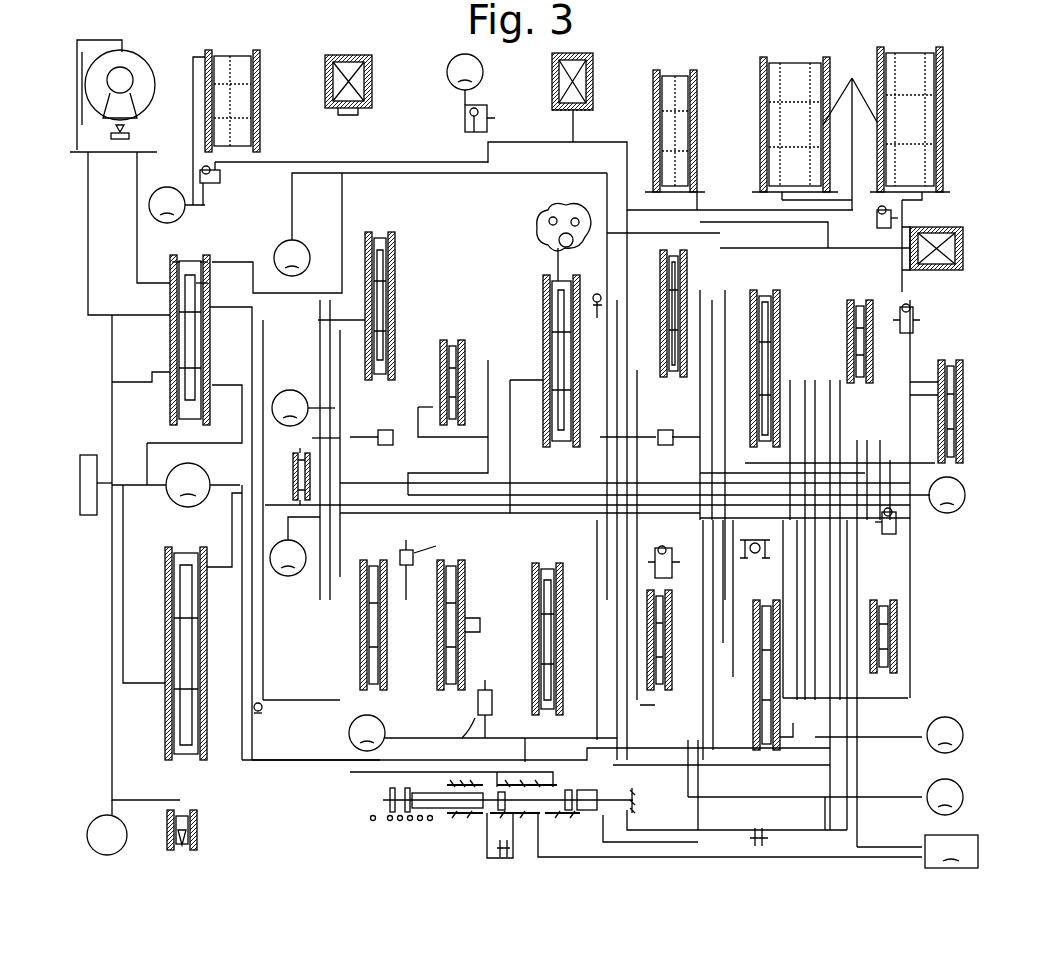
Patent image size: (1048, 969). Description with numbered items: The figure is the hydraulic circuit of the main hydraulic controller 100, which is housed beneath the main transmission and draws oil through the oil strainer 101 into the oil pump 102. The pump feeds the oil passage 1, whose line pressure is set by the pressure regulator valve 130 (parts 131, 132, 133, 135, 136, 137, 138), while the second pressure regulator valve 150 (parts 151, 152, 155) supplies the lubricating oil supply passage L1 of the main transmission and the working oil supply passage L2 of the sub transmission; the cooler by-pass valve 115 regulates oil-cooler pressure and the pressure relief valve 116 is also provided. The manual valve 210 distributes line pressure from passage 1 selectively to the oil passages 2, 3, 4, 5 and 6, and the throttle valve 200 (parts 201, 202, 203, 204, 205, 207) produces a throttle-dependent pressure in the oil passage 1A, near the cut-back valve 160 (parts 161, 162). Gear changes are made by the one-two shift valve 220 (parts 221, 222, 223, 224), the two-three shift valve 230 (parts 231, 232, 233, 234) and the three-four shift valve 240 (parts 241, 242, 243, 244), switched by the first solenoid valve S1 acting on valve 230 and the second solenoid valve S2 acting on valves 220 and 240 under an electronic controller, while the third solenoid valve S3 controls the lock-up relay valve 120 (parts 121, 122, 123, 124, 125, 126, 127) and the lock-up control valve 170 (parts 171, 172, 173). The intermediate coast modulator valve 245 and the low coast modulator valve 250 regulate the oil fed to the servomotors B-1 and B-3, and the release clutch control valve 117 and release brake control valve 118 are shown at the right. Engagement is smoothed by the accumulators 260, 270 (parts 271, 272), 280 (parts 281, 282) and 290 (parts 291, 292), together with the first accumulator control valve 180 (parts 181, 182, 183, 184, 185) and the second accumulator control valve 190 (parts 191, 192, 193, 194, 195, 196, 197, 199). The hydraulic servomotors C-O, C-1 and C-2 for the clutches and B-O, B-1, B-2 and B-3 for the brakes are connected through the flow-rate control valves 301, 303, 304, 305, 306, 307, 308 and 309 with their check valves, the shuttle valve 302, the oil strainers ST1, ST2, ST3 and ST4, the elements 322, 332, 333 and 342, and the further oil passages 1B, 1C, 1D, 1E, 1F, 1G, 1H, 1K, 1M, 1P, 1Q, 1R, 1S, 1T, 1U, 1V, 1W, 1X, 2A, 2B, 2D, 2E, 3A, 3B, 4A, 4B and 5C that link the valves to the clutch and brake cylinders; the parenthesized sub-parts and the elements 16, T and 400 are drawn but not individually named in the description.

The engine output shaft 16 is at (77, 58).
The torque converter T is at (155, 68).
The main hydraulic controller 100 is at (990, 135).
The oil strainer 101 is at (80, 498).
The oil pump 102 is at (188, 485).
The cooler by-pass valve 115 is at (205, 815).
The pressure relief valve 116 is at (292, 500).
The release clutch control valve 117 is at (900, 678).
The release brake control valve 118 is at (668, 695).
The lock-up relay valve 120 is at (205, 250).
The spool 121 is at (172, 262).
The spring 122 is at (208, 286).
The land 123 is at (208, 348).
The plunger 124 is at (192, 418).
The land 125 is at (172, 348).
The port 126 is at (172, 415).
The port 127 is at (208, 262).
The pressure regulator valve 130 is at (172, 762).
The spool 131 is at (170, 622).
The port 132 is at (170, 718).
The port 133 is at (172, 745).
The spring 135 is at (170, 693).
The port 136 is at (170, 556).
The port 137 is at (170, 598).
The port 138 is at (170, 578).
The second pressure regulator valve 150 is at (372, 228).
The spool 151 is at (396, 270).
The spring 152 is at (396, 298).
The port 155 is at (335, 318).
The cut-back valve 160 is at (452, 338).
The spool 161 is at (442, 350).
The spring 162 is at (442, 378).
The lock-up control valve 170 is at (366, 556).
The spool 171 is at (378, 562).
The port 172 is at (360, 597).
The port 173 is at (360, 672).
The first accumulator control valve 180 is at (442, 694).
The spool 181 is at (440, 665).
The land 182 is at (466, 572).
The land 183 is at (466, 585).
The port 184 is at (456, 680).
The spring 185 is at (466, 560).
The second accumulator control valve 190 is at (532, 710).
The spool 191 is at (560, 700).
The land 192 is at (560, 645).
The land 193 is at (558, 590).
The spring 194 is at (556, 568).
The port 195 is at (558, 612).
The port 196 is at (540, 562).
The port 197 is at (560, 670).
The port 199 is at (538, 680).
The throttle valve 200 is at (545, 268).
The spool 201 is at (545, 290).
The land 202 is at (548, 420).
The port 203 is at (545, 325).
The spring 204 is at (548, 447).
The cam 205 is at (570, 210).
The port 207 is at (568, 437).
The manual valve 210 is at (445, 838).
The 1-2 shift valve 220 is at (766, 752).
The spool 221 is at (755, 748).
The port 222 is at (782, 665).
The spring 223 is at (780, 748).
The port 224 is at (762, 598).
The 2-3 shift valve 230 is at (752, 285).
The spool 231 is at (770, 447).
The port 232 is at (780, 296).
The spring 233 is at (752, 440).
The port 234 is at (766, 290).
The 3-4 shift valve 240 is at (690, 256).
The spool 241 is at (687, 326).
The land 242 is at (687, 306).
The port 243 is at (660, 272).
The spring 244 is at (660, 364).
The intermediate coast modulator valve 245 is at (848, 298).
The low coast modulator valve 250 is at (972, 390).
The accumulator 260 is at (270, 95).
The accumulator 270 is at (718, 90).
The piston 271 is at (660, 124).
The spring 272 is at (660, 150).
The accumulator 280 is at (830, 85).
The piston 281 is at (823, 125).
The spring 282 is at (823, 150).
The accumulator 290 is at (950, 85).
The piston 291 is at (877, 122).
The spring 292 is at (877, 150).
The flow-rate control valve 301 is at (220, 174).
The shuttle valve 302 is at (752, 560).
The flow-rate control valve 303 is at (652, 555).
The flow-rate control valve 304 is at (878, 222).
The flow-rate control valve 305 is at (597, 294).
The flow-rate control valve 306 is at (700, 215).
The flow-rate control valve 307 is at (480, 104).
The flow-rate control valve 308 is at (900, 524).
The flow-rate control valve 309 is at (916, 318).
The orifice 322 is at (418, 540).
The orifice 332 is at (665, 428).
The orifice 333 is at (460, 612).
The orifice 342 is at (384, 437).
The electronic control unit 400 is at (951, 851).
The first solenoid valve S1 is at (596, 72).
The second solenoid valve S2 is at (965, 248).
The third solenoid valve S3 is at (372, 70).
The oil strainer ST1 is at (463, 714).
The oil strainer ST2 is at (666, 448).
The oil strainer ST3 is at (433, 568).
The oil strainer ST4 is at (398, 450).
The hydraulic servomotor C-O is at (177, 140).
The hydraulic servomotor C-1 is at (483, 738).
The hydraulic servomotor C-2 is at (295, 546).
The hydraulic servomotor B-O is at (309, 224).
The hydraulic servomotor B-1 is at (465, 79).
The hydraulic servomotor B-2 is at (947, 495).
The hydraulic servomotor B-3 is at (945, 735).
The lubricating oil supply passage L1 is at (303, 408).
The working oil supply passage L2 is at (945, 797).
The oil passage 1 is at (252, 612).
The oil passage 2 is at (390, 585).
The oil passage 3 is at (728, 335).
The oil passage 4 is at (735, 415).
The oil passage 5 is at (210, 600).
The oil passage 6 is at (790, 860).
The oil passage 1A is at (728, 400).
The passage 1B is at (796, 380).
The passage 1C is at (793, 725).
The passage 1D is at (640, 330).
The passage 1E is at (215, 205).
The passage 1F is at (415, 162).
The passage 1G is at (434, 173).
The passage 1H is at (686, 437).
The passage 1K is at (597, 538).
The passage 1M is at (458, 650).
The passage 1P is at (542, 518).
The passage 1Q is at (212, 308).
The passage 1R is at (160, 323).
The passage 1S is at (160, 300).
The passage 1T is at (112, 556).
The passage 1U is at (134, 382).
The passage 1V is at (436, 345).
The passage 1W is at (476, 350).
The passage 1X is at (462, 385).
The passage 2A is at (420, 440).
The passage 2B is at (910, 352).
The passage 2D is at (312, 438).
The passage 2E is at (405, 484).
The passage 3A is at (798, 320).
The passage 3B is at (472, 133).
The passage 4A is at (860, 385).
The passage 4B is at (915, 590).
The passage 5C is at (782, 684).